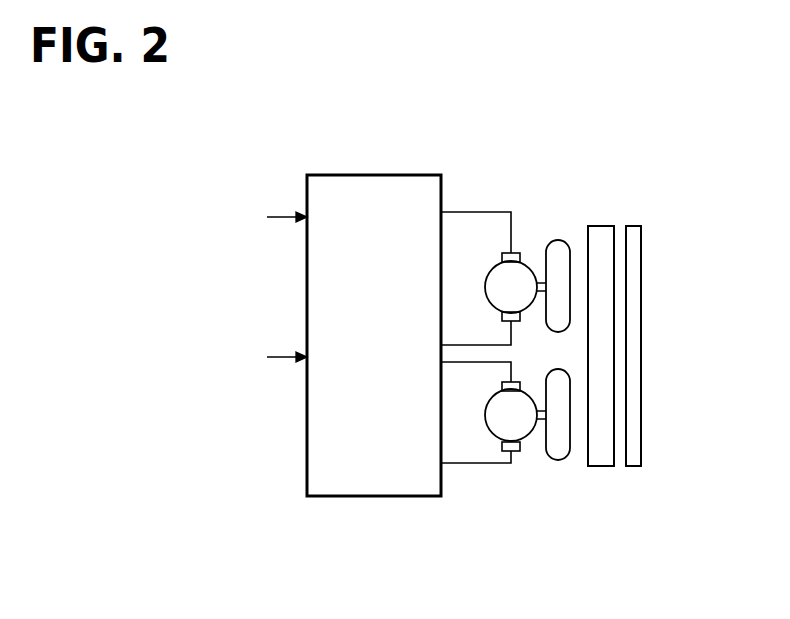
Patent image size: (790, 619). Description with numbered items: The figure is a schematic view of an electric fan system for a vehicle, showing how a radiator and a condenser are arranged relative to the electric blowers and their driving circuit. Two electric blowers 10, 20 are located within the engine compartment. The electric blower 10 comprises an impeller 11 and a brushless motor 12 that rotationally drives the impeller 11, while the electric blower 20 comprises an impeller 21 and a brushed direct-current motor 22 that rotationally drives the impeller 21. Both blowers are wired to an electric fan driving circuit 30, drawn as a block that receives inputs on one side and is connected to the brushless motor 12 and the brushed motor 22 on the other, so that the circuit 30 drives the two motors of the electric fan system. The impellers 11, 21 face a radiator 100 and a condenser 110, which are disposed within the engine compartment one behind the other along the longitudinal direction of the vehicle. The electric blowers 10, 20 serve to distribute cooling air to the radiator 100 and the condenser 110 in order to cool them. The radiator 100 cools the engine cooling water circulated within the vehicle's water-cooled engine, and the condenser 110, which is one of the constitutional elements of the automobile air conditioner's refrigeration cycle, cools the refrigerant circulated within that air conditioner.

The electric blower 10 is at (546, 236).
The impeller 11 is at (535, 230).
The brushless motor 12 is at (487, 279).
The electric blower 20 is at (512, 471).
The impeller 21 is at (531, 460).
The brushed motor 22 is at (486, 420).
The electric fan driving circuit 30 is at (405, 497).
The radiator 100 is at (600, 466).
The condenser 110 is at (632, 466).